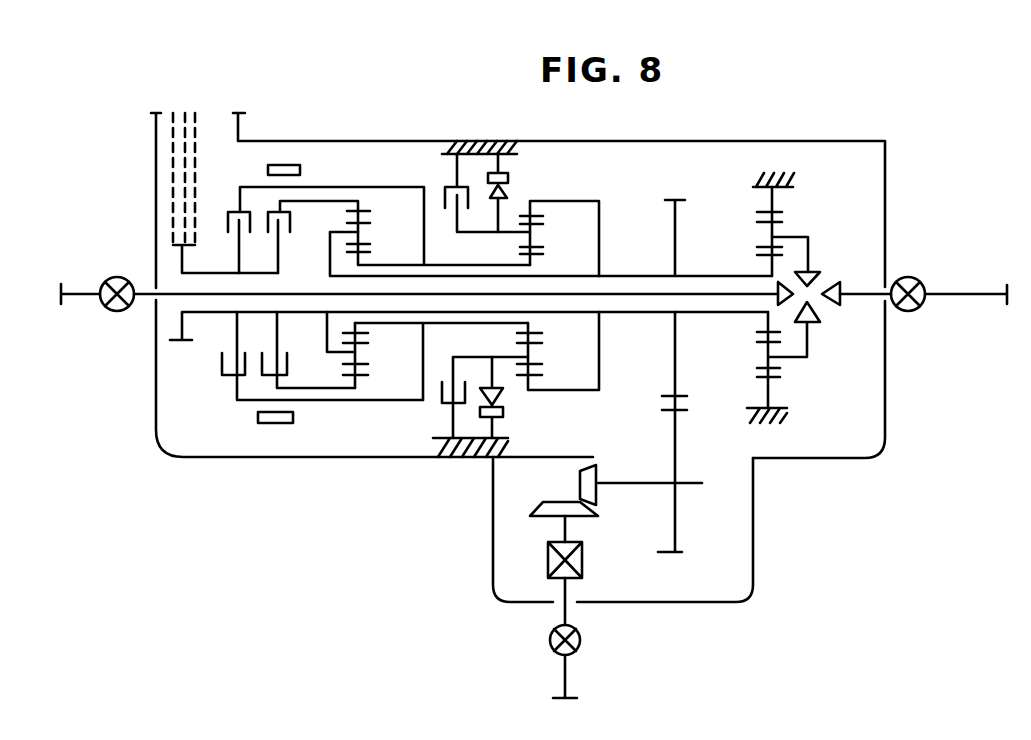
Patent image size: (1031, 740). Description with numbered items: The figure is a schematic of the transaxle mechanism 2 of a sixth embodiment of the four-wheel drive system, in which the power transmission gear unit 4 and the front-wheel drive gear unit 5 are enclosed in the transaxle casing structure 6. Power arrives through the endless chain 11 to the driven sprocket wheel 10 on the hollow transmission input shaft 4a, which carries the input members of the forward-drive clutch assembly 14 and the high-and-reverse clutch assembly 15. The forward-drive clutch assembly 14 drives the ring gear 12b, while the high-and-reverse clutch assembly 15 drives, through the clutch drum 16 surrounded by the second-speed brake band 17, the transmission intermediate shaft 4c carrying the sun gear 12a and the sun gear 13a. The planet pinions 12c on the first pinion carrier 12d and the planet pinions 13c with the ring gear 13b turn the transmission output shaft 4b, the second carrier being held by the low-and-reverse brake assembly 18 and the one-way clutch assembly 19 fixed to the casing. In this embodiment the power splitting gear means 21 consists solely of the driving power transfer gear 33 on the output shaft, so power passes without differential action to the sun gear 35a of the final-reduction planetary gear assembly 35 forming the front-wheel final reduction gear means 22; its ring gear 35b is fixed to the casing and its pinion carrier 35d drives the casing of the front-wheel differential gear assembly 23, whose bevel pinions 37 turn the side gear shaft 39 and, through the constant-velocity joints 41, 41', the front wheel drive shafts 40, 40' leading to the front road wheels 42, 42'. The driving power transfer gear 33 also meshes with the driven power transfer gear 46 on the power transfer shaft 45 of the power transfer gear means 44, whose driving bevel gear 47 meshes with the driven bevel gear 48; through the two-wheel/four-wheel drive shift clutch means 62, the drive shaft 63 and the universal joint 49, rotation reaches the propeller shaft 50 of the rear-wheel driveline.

The transaxle mechanism 2 is at (395, 484).
The power transmission gear unit 4 is at (342, 175).
The transmission input shaft 4a is at (199, 313).
The transmission output shaft 4b is at (326, 312).
The transmission intermediate shaft 4c is at (448, 323).
The front-wheel drive gear unit 5 is at (787, 490).
The transaxle casing structure 6 is at (258, 137).
The driven sprocket wheel 10 is at (186, 259).
The endless chain 11 is at (172, 208).
The sun gear 12a is at (363, 252).
The ring gear 12b is at (372, 211).
The planet pinions 12c is at (358, 359).
The first pinion carrier 12d is at (330, 232).
The sun gear 13a is at (520, 254).
The ring gear 13b is at (527, 210).
The planet pinions 13c is at (533, 359).
The forward-drive clutch assembly 14 is at (258, 384).
The high-and-reverse clutch assembly 15 is at (222, 382).
The clutch drum 16 is at (350, 401).
The second-speed brake band 17 is at (284, 425).
The low-and-reverse brake assembly 18 is at (440, 172).
The one-way clutch assembly 19 is at (476, 173).
The power splitting gear means 21 is at (656, 131).
The front-wheel final reduction gear means 22 is at (835, 132).
The front-wheel differential gear assembly 23 is at (837, 340).
The driving power transfer gear 33 is at (673, 218).
The final-reduction planetary gear assembly 35 is at (776, 160).
The sun gear 35a is at (758, 268).
The ring gear 35b is at (774, 210).
The pinion carrier 35d is at (800, 237).
The bevel pinions 37 is at (822, 270).
The side gear shaft 39 is at (146, 303).
The front wheel drive shaft 40 is at (80, 276).
The front wheel drive shaft 40' is at (966, 280).
The constant-velocity joint 41 is at (105, 311).
The constant-velocity joint 41' is at (926, 308).
The front road wheel 42 is at (774, 352).
The front road wheel 42' is at (845, 284).
The power transfer gear means 44 is at (654, 580).
The power transfer shaft 45 is at (637, 483).
The driven power transfer gear 46 is at (680, 520).
The driving bevel gear 47 is at (580, 480).
The driven bevel gear 48 is at (553, 500).
The universal joint 49 is at (582, 642).
The propeller shaft 50 is at (562, 673).
The two-wheel/four-wheel drive shift clutch means 62 is at (583, 562).
The drive shaft 63 is at (562, 609).